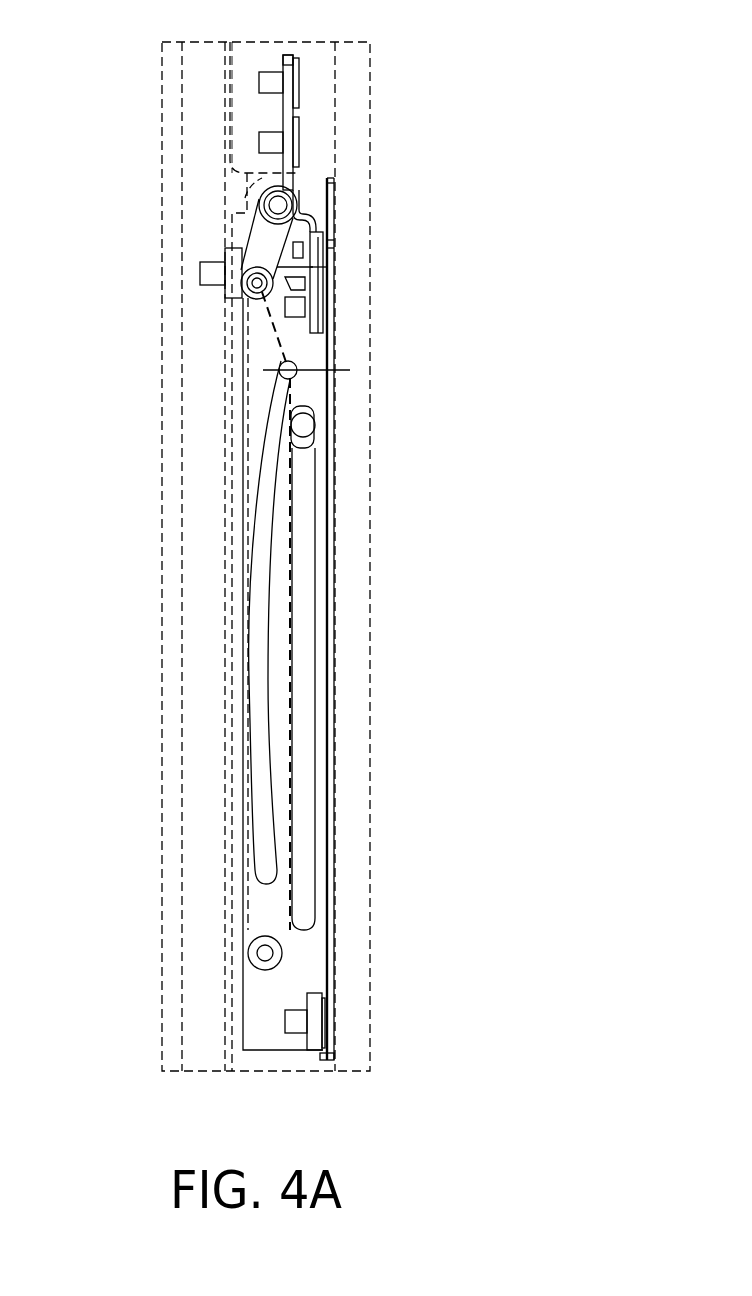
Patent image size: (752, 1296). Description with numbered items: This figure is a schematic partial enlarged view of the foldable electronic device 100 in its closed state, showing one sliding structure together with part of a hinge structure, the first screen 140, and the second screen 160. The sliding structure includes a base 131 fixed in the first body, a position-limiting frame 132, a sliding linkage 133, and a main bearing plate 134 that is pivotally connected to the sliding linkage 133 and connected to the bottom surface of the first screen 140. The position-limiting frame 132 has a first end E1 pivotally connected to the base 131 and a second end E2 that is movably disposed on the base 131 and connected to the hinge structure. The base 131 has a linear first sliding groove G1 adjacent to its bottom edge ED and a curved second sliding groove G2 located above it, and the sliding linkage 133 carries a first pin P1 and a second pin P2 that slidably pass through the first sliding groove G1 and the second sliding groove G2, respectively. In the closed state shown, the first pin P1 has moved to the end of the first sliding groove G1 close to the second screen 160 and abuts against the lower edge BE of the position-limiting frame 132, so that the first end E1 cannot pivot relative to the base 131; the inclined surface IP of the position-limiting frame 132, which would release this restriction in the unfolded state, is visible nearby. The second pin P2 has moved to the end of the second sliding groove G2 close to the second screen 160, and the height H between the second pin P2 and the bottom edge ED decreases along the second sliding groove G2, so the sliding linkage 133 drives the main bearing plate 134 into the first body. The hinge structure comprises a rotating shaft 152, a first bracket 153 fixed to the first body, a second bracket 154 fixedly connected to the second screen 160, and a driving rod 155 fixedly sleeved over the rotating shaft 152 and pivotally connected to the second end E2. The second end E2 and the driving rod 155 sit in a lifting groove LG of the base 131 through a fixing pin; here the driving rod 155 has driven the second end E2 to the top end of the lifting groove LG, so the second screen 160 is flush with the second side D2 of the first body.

The foldable electronic device 100 is at (591, 1117).
The base 131 is at (300, 975).
The position-limiting frame 132 is at (262, 905).
The sliding linkage 133 is at (285, 438).
The main bearing plate 134 is at (243, 278).
The first screen 140 is at (200, 588).
The rotating shaft 152 is at (278, 205).
The first bracket 153 is at (320, 272).
The second bracket 154 is at (288, 114).
The driving rod 155 is at (263, 242).
The second screen 160 is at (317, 82).
The second side D2 is at (338, 173).
The second end E2 is at (257, 283).
The first end E1 is at (262, 958).
The lifting groove LG is at (300, 286).
The height H is at (330, 371).
The second pin P2 is at (291, 373).
The first pin P1 is at (305, 425).
The bottom edge ED is at (338, 652).
The lower edge BE is at (298, 693).
The first sliding groove G1 is at (306, 847).
The second sliding groove G2 is at (262, 748).
The inclined surface IP is at (290, 936).